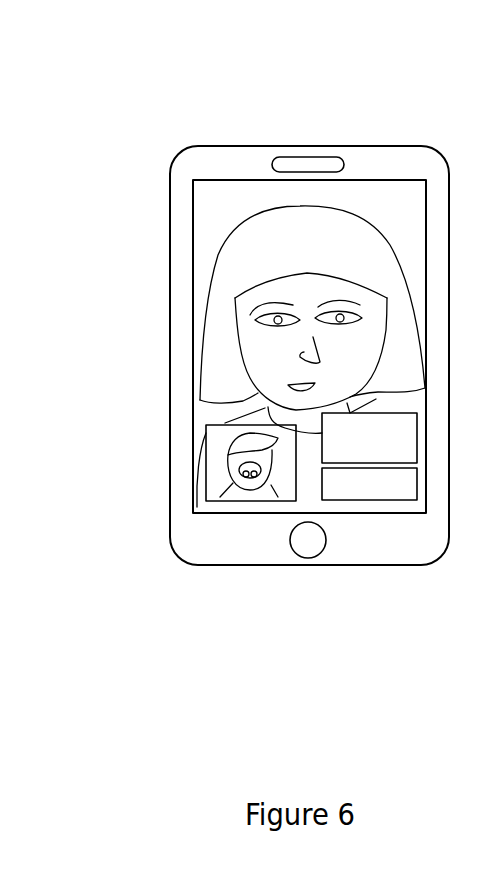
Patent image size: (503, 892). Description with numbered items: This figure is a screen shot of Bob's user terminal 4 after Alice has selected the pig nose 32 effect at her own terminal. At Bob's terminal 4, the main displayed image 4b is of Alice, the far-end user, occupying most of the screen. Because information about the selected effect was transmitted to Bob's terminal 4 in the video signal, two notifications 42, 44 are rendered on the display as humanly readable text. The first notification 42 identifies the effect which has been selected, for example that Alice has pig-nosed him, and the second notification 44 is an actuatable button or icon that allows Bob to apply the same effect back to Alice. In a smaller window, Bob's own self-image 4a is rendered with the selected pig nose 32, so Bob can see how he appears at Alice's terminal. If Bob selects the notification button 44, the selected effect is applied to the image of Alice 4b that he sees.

The user terminal 4 is at (260, 146).
The self-image 4a is at (218, 490).
The image of the far-end user 4b is at (245, 431).
The pig nose 32 is at (247, 470).
The first notification 42 is at (369, 438).
The notification button 44 is at (369, 484).